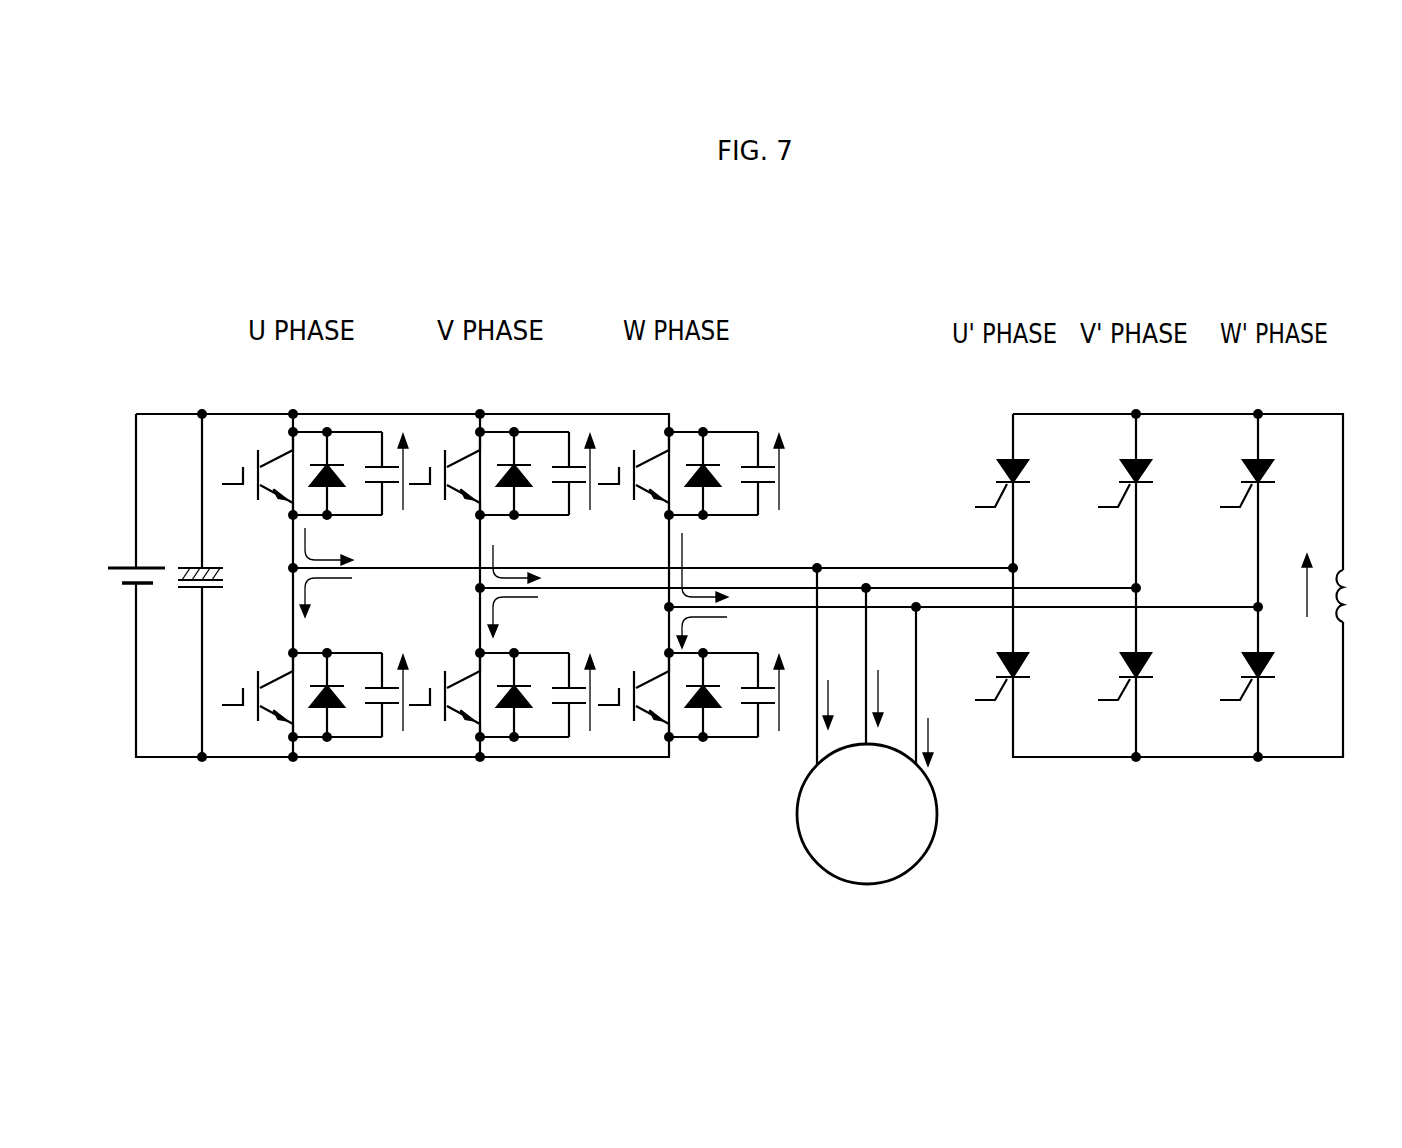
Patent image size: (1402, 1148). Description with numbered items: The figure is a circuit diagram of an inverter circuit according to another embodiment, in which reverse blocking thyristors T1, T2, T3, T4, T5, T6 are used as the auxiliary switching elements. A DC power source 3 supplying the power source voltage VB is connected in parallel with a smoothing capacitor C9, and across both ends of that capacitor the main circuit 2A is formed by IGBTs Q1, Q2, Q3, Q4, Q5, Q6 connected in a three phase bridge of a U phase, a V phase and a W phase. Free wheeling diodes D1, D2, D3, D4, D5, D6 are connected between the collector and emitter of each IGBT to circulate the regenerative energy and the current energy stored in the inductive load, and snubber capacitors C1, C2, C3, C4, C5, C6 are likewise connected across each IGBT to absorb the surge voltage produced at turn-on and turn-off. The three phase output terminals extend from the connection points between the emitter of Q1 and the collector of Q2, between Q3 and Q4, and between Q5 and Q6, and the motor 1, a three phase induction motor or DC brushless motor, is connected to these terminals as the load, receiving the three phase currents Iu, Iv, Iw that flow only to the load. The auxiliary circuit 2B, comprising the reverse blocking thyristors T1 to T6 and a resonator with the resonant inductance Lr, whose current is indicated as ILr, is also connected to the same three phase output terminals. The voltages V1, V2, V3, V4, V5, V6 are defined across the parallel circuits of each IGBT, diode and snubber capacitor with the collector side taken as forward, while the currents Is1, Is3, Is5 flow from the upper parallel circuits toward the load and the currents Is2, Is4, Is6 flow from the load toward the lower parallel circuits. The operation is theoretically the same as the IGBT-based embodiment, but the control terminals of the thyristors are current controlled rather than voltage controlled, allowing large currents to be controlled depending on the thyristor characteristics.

The motor 1 is at (902, 873).
The main circuit 2A is at (550, 292).
The auxiliary circuit 2B is at (1152, 292).
The DC power source 3 is at (125, 566).
The power source voltage VB is at (119, 600).
The smoothing capacitor C9 is at (190, 590).
The IGBT Q1 is at (280, 447).
The IGBT Q2 is at (270, 718).
The IGBT Q3 is at (467, 447).
The IGBT Q4 is at (457, 718).
The IGBT Q5 is at (656, 447).
The IGBT Q6 is at (646, 718).
The free wheeling diode D1 is at (333, 462).
The free wheeling diode D2 is at (333, 708).
The free wheeling diode D3 is at (520, 462).
The free wheeling diode D4 is at (520, 708).
The free wheeling diode D5 is at (709, 462).
The free wheeling diode D6 is at (709, 708).
The snubber capacitor C1 is at (388, 468).
The snubber capacitor C2 is at (389, 705).
The snubber capacitor C3 is at (575, 468).
The snubber capacitor C4 is at (576, 705).
The snubber capacitor C5 is at (764, 468).
The snubber capacitor C6 is at (765, 705).
The voltage V1 is at (407, 487).
The voltage V2 is at (407, 677).
The voltage V3 is at (594, 487).
The voltage V4 is at (594, 677).
The voltage V5 is at (783, 487).
The voltage V6 is at (783, 677).
The electric current Is1 is at (329, 545).
The electric current Is2 is at (326, 597).
The electric current Is3 is at (516, 562).
The electric current Is4 is at (513, 617).
The electric current Is5 is at (705, 567).
The electric current Is6 is at (702, 634).
The three phase electric current Iu is at (831, 691).
The three phase electric current Iv is at (881, 686).
The three phase electric current Iw is at (934, 727).
The reverse blocking thyristor T1 is at (1025, 462).
The reverse blocking thyristor T2 is at (1020, 680).
The reverse blocking thyristor T3 is at (1148, 462).
The reverse blocking thyristor T4 is at (1143, 680).
The reverse blocking thyristor T5 is at (1270, 462).
The reverse blocking thyristor T6 is at (1265, 680).
The resonant inductance Lr is at (1350, 612).
The reactor current ILr is at (1306, 569).